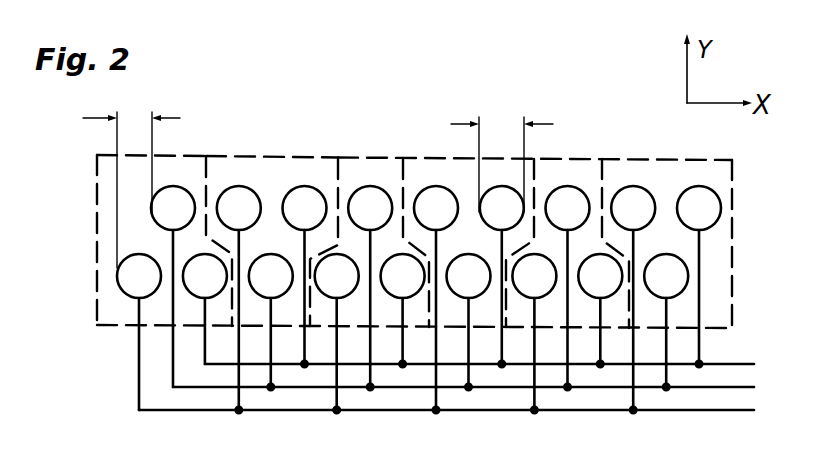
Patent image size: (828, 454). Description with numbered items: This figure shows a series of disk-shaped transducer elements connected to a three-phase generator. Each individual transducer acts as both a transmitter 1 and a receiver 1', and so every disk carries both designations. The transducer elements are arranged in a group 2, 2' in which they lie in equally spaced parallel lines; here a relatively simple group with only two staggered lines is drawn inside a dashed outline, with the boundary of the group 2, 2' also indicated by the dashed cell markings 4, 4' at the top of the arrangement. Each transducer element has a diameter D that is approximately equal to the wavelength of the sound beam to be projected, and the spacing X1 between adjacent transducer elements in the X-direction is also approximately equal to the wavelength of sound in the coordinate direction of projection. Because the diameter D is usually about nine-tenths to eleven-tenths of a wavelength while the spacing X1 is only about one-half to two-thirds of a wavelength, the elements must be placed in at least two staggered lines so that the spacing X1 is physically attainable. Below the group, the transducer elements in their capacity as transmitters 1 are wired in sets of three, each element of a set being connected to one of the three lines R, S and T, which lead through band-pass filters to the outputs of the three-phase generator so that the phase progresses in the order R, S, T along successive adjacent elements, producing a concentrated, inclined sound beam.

The transmitter 1 is at (436, 164).
The receiver 1' is at (402, 198).
The group of transducer elements 2 is at (445, 241).
The group of transducer elements 2' is at (499, 242).
The first electrode group boundary 4 is at (160, 140).
The second electrode group boundary 4' is at (264, 142).
The spacing between adjacent transducer elements X1 is at (131, 190).
The diameter of transducer element D is at (502, 163).
The line R is at (492, 304).
The line S is at (474, 317).
The line T is at (457, 330).